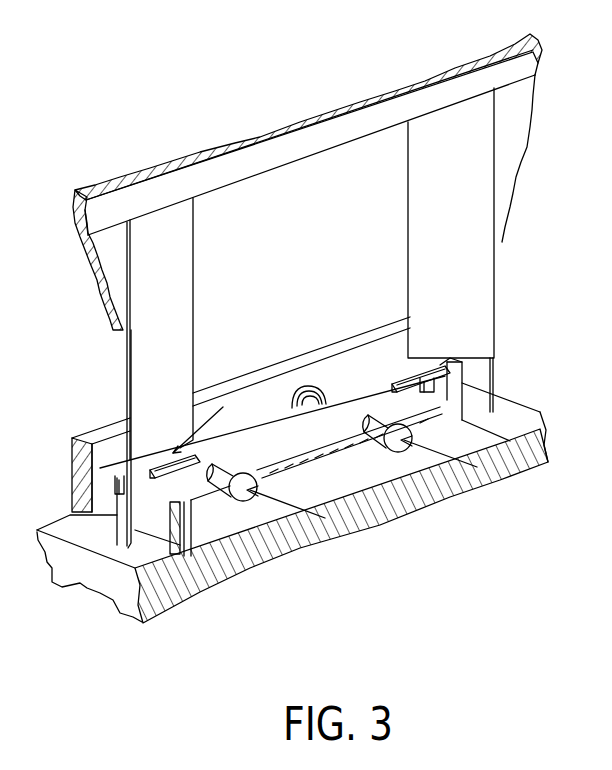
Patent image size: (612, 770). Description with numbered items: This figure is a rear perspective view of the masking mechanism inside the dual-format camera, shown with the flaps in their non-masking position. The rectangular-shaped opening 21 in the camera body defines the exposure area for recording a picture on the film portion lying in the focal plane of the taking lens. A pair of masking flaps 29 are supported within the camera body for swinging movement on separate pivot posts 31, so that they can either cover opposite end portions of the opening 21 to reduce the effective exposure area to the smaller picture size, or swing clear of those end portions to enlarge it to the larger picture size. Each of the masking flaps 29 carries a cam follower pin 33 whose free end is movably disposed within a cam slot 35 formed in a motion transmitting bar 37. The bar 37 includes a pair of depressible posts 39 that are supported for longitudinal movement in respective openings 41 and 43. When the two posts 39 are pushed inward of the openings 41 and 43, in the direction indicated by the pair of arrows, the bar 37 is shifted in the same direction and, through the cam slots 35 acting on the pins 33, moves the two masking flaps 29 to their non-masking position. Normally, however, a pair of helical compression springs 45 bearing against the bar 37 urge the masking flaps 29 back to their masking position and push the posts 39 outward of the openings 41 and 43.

The rectangular-shaped opening 21 is at (305, 187).
The masking flaps 29 is at (175, 292).
The pivot posts 31 is at (120, 532).
The cam follower pin 33 is at (163, 463).
The cam slot 35 is at (130, 492).
The motion transmitting bar 37 is at (363, 393).
The depressible posts 39 is at (229, 466).
The opening 41 is at (377, 430).
The opening 43 is at (204, 512).
The helical compression springs 45 is at (288, 402).